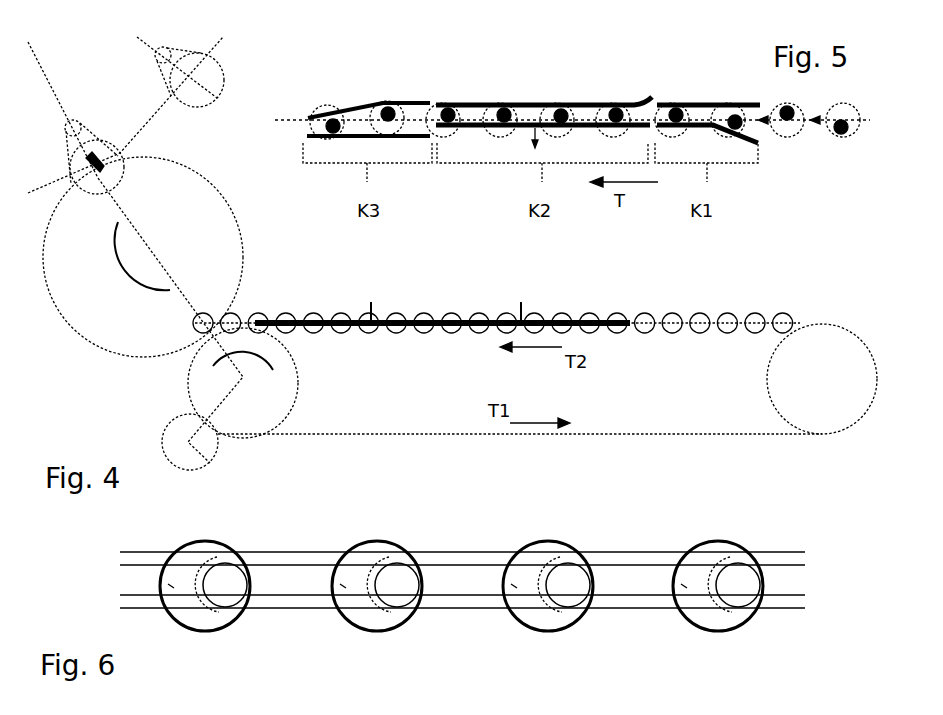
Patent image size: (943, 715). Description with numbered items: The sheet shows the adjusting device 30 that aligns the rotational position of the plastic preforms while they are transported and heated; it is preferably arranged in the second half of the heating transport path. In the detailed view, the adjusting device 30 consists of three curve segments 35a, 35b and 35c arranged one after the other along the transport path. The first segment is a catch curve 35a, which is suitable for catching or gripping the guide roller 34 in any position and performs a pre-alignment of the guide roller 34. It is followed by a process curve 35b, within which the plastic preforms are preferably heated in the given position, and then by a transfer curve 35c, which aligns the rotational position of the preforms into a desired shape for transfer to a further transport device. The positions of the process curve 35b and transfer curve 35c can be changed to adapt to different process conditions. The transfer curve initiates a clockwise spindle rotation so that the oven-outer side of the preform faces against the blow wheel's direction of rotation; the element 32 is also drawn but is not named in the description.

In FIG. 4, the adjusting device 30 is at (438, 302).
In FIG. 5, the adjusting device 30 is at (427, 93).
In FIG. 5, the chain link 32 is at (785, 135).
In FIG. 5, the guide roller 34 is at (793, 135).
In FIG. 6, the guide roller 34 is at (565, 555).
In FIG. 5, the catch curve 35a is at (698, 102).
In FIG. 5, the process curve 35b is at (522, 100).
In FIG. 5, the transfer curve 35c is at (360, 112).